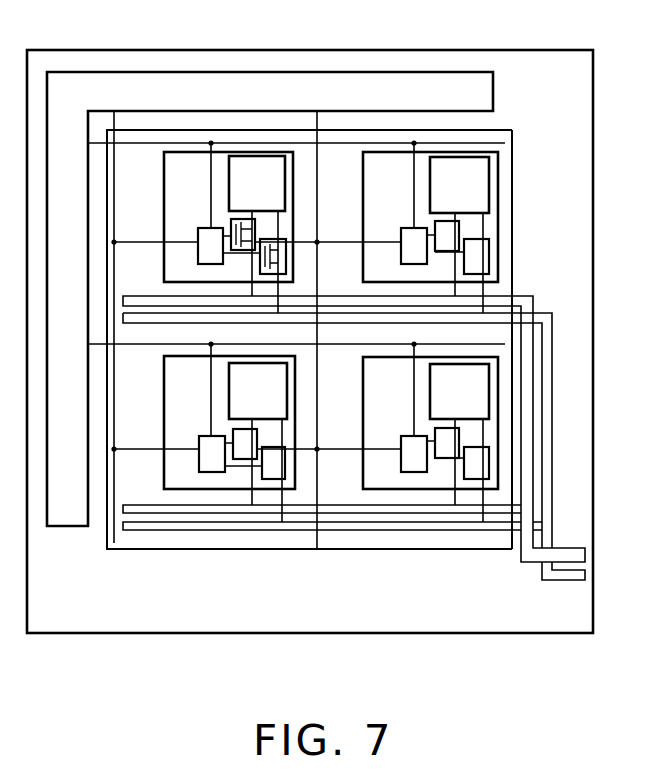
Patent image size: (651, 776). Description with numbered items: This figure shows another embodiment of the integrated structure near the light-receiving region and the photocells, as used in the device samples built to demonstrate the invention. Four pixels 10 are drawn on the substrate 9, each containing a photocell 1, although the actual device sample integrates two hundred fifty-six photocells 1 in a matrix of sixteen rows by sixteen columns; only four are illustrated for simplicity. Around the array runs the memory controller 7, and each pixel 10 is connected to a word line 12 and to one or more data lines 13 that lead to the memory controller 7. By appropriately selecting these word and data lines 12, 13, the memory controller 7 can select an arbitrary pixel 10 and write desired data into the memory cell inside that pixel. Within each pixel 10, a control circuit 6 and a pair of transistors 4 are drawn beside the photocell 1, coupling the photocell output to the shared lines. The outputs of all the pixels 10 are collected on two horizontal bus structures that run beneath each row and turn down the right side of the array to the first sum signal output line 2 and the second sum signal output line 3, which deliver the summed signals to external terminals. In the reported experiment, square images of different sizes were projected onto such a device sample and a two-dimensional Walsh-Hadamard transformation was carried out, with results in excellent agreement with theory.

The memory controller 7 is at (159, 83).
The word line 12 is at (256, 142).
The substrate 9 is at (512, 178).
The data line 13 is at (114, 273).
The pixel 10 is at (232, 232).
The photocell 1 is at (284, 180).
The control circuit 6 is at (198, 234).
The transistor 4 is at (256, 228).
The first sum signal output line 2 is at (586, 553).
The second sum signal output line 3 is at (586, 580).